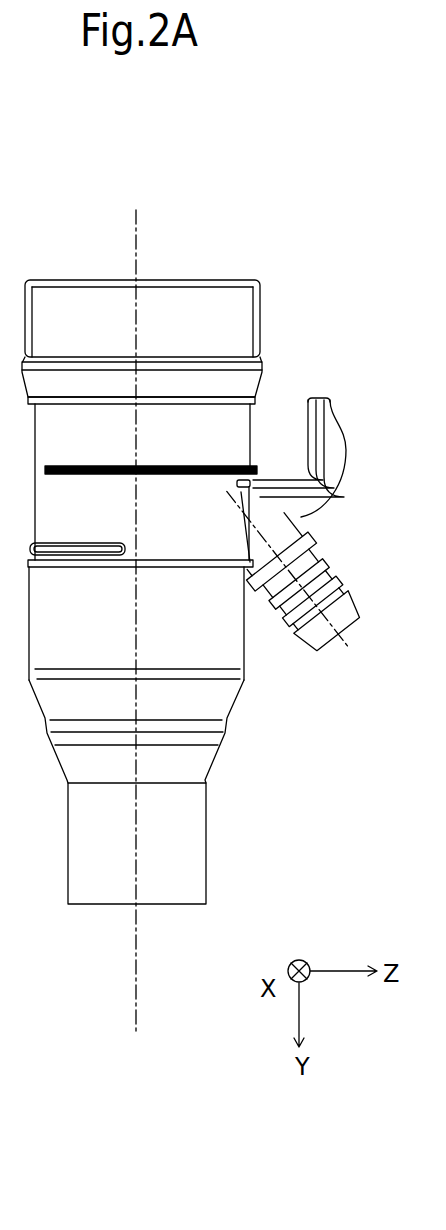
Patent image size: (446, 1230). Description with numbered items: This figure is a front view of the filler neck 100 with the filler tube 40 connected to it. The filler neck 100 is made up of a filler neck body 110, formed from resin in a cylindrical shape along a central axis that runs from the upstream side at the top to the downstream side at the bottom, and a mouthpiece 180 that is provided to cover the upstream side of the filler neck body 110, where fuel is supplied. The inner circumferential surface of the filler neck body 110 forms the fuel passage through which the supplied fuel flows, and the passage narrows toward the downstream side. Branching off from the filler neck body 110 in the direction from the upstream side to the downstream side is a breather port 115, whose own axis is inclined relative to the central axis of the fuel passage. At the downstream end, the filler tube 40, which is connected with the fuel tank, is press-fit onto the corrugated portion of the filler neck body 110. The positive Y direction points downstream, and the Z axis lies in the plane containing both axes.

The filler neck 100 is at (67, 244).
The mouthpiece 180 is at (215, 282).
The filler neck body 110 is at (248, 455).
The breather port 115 is at (330, 556).
The filler tube 40 is at (82, 903).